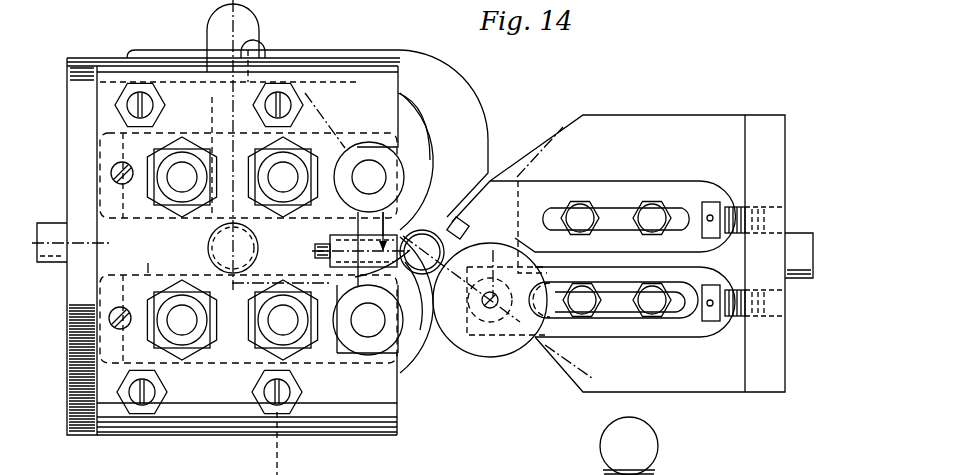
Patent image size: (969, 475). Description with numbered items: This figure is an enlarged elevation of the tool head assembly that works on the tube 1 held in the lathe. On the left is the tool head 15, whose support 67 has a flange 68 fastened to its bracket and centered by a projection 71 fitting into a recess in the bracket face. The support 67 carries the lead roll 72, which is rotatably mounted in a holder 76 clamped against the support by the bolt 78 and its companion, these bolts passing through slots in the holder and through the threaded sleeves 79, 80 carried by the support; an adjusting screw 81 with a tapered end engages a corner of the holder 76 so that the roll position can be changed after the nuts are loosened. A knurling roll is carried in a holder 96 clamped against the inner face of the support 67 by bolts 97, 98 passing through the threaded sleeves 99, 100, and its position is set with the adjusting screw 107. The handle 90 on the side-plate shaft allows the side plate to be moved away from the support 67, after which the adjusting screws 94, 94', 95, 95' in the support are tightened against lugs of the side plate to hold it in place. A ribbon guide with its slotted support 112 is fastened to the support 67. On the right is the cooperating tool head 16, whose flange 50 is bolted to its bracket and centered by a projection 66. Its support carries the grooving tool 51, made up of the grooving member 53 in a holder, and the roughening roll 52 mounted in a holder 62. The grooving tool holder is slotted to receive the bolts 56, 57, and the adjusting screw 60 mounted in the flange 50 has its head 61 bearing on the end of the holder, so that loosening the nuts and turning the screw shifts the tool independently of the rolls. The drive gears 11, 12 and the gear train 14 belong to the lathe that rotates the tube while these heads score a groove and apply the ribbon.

The tube 1 is at (433, 217).
The gear 11 is at (322, 112).
The gear 12 is at (531, 158).
The train of gears 14 is at (417, 353).
The tool head 15 is at (355, 72).
The tool head 16 is at (50, 238).
The flange 50 is at (762, 125).
The grooving tool 51 is at (547, 193).
The roughening roll 52 is at (512, 318).
The cutting or grooving member 53 is at (447, 213).
The bolt 56 is at (583, 203).
The bolt 57 is at (653, 206).
The adjusting screw 60 is at (733, 207).
The head of the adjusting screw 61 is at (713, 200).
The holder 62 is at (485, 337).
The projection 66 is at (795, 237).
The support 67 is at (110, 143).
The flange 68 is at (73, 390).
The projection 71 is at (50, 262).
The lead roll 72 is at (415, 137).
The holder 76 is at (127, 220).
The bolt 78 is at (285, 168).
The threaded sleeve 79 is at (173, 217).
The threaded sleeve 80 is at (268, 215).
The adjusting screw 81 is at (112, 170).
The handle 90 is at (212, 21).
The adjusting screw 94 is at (140, 73).
The adjusting screw 95 is at (296, 73).
The adjusting screw 94' is at (129, 419).
The adjusting screw 95' is at (263, 419).
The holder 96 is at (148, 266).
The bolt 97 is at (280, 325).
The bolt 98 is at (173, 330).
The threaded sleeve 99 is at (278, 283).
The threaded sleeve 100 is at (165, 282).
The adjusting screw 107 is at (110, 318).
The support 112 is at (428, 330).